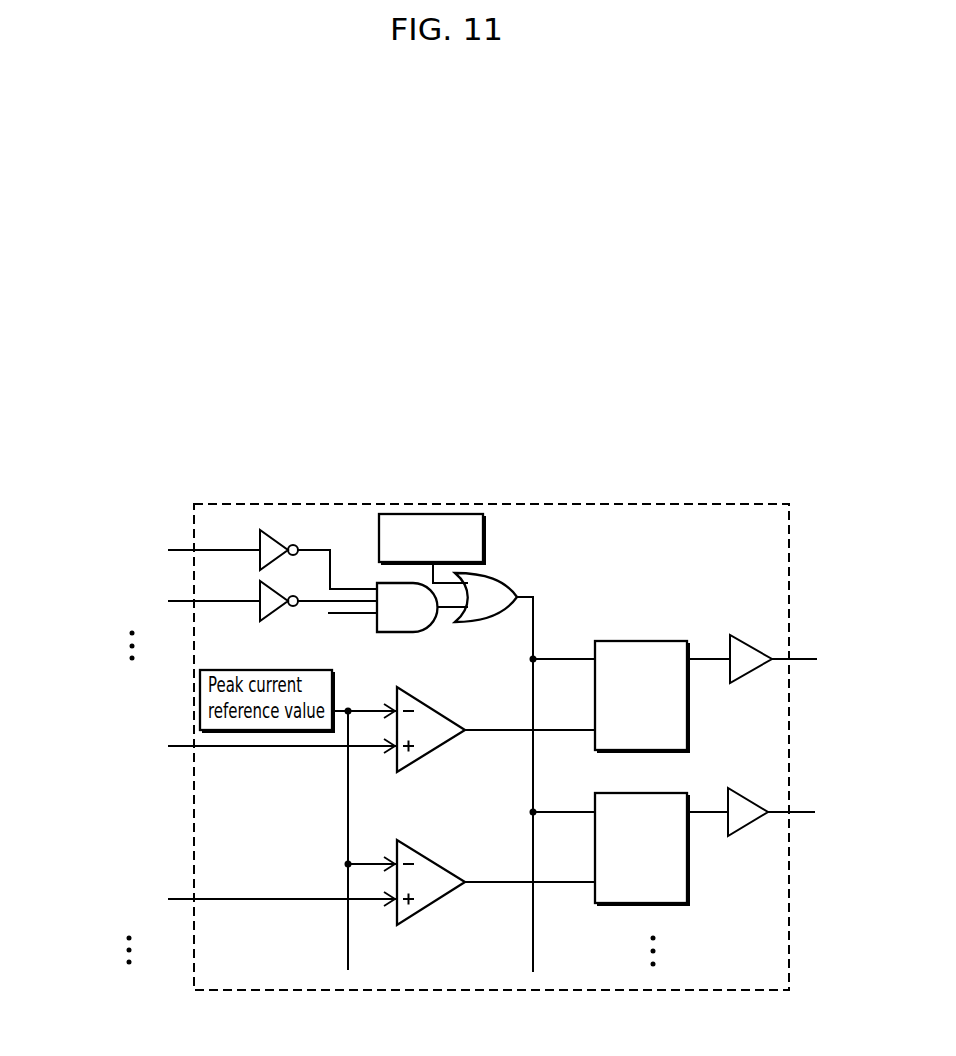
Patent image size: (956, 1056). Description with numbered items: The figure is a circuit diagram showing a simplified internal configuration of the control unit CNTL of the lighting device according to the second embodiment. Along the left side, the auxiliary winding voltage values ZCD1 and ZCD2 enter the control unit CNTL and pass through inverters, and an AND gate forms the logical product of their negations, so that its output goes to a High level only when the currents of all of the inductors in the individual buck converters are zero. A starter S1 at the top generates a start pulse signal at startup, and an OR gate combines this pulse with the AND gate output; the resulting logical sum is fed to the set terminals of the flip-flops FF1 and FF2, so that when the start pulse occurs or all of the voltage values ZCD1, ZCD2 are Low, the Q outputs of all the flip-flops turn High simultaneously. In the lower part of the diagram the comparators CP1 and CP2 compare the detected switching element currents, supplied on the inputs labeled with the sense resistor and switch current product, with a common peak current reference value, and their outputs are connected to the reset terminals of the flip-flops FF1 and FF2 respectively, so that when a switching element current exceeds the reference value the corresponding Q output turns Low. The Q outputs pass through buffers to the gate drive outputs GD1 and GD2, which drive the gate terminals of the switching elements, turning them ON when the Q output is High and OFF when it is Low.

The control unit CNTL is at (713, 504).
The starter S1 is at (483, 541).
The voltage value ZCD1 is at (177, 550).
The voltage value ZCD2 is at (177, 602).
The flip-flop FF1 is at (630, 641).
The flip-flop FF2 is at (630, 793).
The comparator CP1 is at (420, 697).
The comparator CP2 is at (420, 850).
The gate drive signal 1 GD1 is at (812, 642).
The gate drive signal 2 GD2 is at (809, 796).